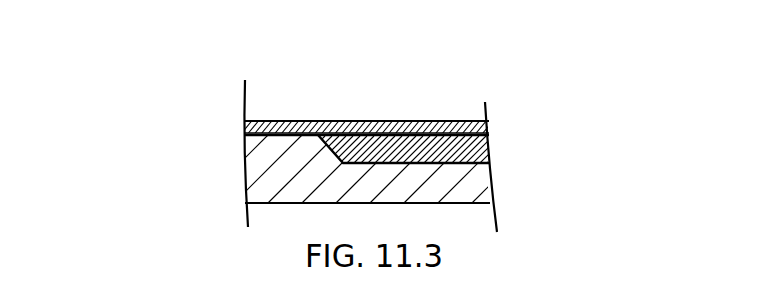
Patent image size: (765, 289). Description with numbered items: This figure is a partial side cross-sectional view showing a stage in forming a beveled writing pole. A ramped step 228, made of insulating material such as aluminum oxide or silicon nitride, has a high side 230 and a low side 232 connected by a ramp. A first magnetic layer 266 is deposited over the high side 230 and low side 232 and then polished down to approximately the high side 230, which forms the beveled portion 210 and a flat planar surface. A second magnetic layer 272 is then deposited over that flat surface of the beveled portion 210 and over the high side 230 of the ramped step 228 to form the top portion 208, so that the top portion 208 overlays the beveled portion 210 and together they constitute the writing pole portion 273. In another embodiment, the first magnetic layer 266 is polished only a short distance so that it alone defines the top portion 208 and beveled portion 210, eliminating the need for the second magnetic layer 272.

The top portion 208 is at (373, 125).
The beveled portion 210 is at (462, 163).
The ramped step 228 is at (250, 185).
The high side 230 is at (248, 137).
The low side 232 is at (472, 193).
The first magnetic layer 266 is at (493, 136).
The second magnetic layer 272 is at (450, 128).
The writing pole portion 273 is at (432, 108).